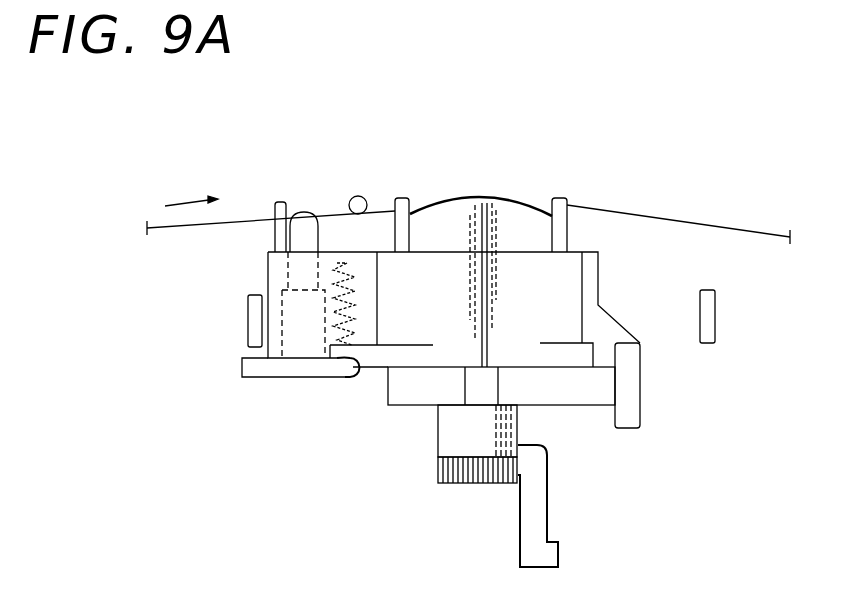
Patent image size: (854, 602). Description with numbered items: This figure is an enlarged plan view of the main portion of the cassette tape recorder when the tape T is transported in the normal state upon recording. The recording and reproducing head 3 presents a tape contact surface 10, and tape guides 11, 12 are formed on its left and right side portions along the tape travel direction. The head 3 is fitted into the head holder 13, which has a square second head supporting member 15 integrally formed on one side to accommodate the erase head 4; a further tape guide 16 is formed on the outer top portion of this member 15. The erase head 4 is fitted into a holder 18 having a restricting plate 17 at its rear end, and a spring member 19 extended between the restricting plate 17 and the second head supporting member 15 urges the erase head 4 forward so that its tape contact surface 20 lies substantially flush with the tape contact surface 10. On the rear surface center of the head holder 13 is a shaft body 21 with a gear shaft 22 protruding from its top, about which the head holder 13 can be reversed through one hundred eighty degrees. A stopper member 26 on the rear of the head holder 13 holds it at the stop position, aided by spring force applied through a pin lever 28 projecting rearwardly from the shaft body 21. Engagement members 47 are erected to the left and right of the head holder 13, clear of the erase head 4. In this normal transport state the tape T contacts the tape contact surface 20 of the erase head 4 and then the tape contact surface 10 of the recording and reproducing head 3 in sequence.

The tape T is at (745, 232).
The recording and reproducing head 3 is at (440, 222).
The erase head 4 is at (298, 227).
The tape contact surface 10 is at (480, 197).
The tape guide 11 is at (403, 200).
The tape guide 12 is at (558, 198).
The head holder 13 is at (510, 250).
The second head supporting member 15 is at (268, 272).
The tape guide 16 is at (277, 203).
The restricting plate 17 is at (242, 377).
The holder 18 is at (293, 327).
The spring member 19 is at (365, 330).
The tape contact surface 20 is at (307, 213).
The shaft body 21 is at (518, 427).
The gear shaft 22 is at (438, 473).
The stopper member 26 is at (640, 390).
The pin lever 28 is at (547, 503).
The engagement member 47 is at (248, 310).